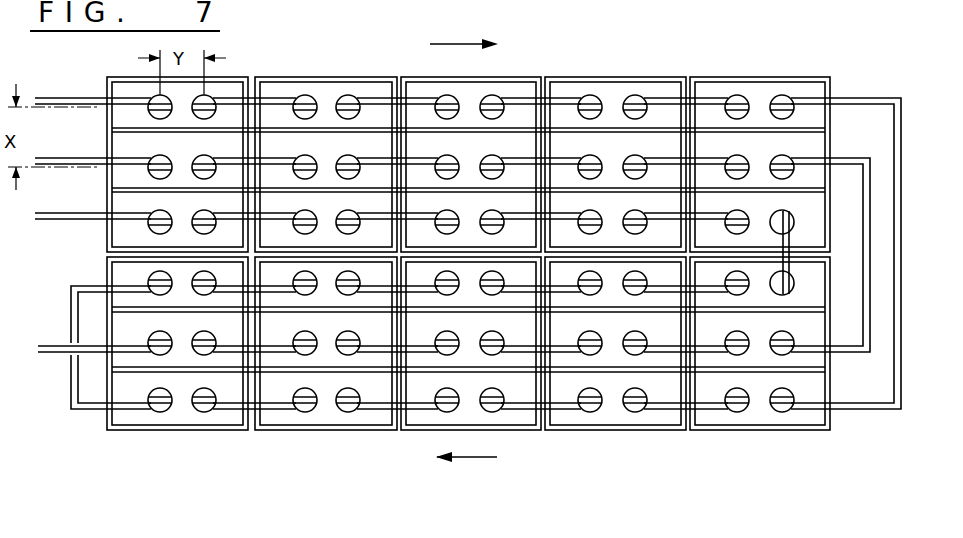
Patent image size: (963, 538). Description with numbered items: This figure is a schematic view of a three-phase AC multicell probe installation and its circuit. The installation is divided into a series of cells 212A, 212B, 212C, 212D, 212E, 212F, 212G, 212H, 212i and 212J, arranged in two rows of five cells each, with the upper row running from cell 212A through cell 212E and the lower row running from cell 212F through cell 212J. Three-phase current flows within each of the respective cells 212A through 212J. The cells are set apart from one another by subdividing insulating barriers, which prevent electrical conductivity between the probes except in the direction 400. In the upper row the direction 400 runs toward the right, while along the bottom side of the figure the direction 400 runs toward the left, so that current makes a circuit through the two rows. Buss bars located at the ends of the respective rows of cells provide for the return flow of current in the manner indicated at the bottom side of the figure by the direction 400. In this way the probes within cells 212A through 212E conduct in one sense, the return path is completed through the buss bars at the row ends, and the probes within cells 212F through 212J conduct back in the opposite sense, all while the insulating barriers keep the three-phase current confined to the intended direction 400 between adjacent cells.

The cell 212A is at (232, 90).
The cell 212B is at (332, 92).
The cell 212C is at (470, 92).
The cell 212D is at (617, 92).
The cell 212E is at (760, 98).
The cell 212F is at (757, 412).
The cell 212G is at (610, 420).
The cell 212H is at (512, 418).
The cell 212i is at (326, 418).
The cell 212J is at (180, 413).
The direction 400 is at (460, 43).